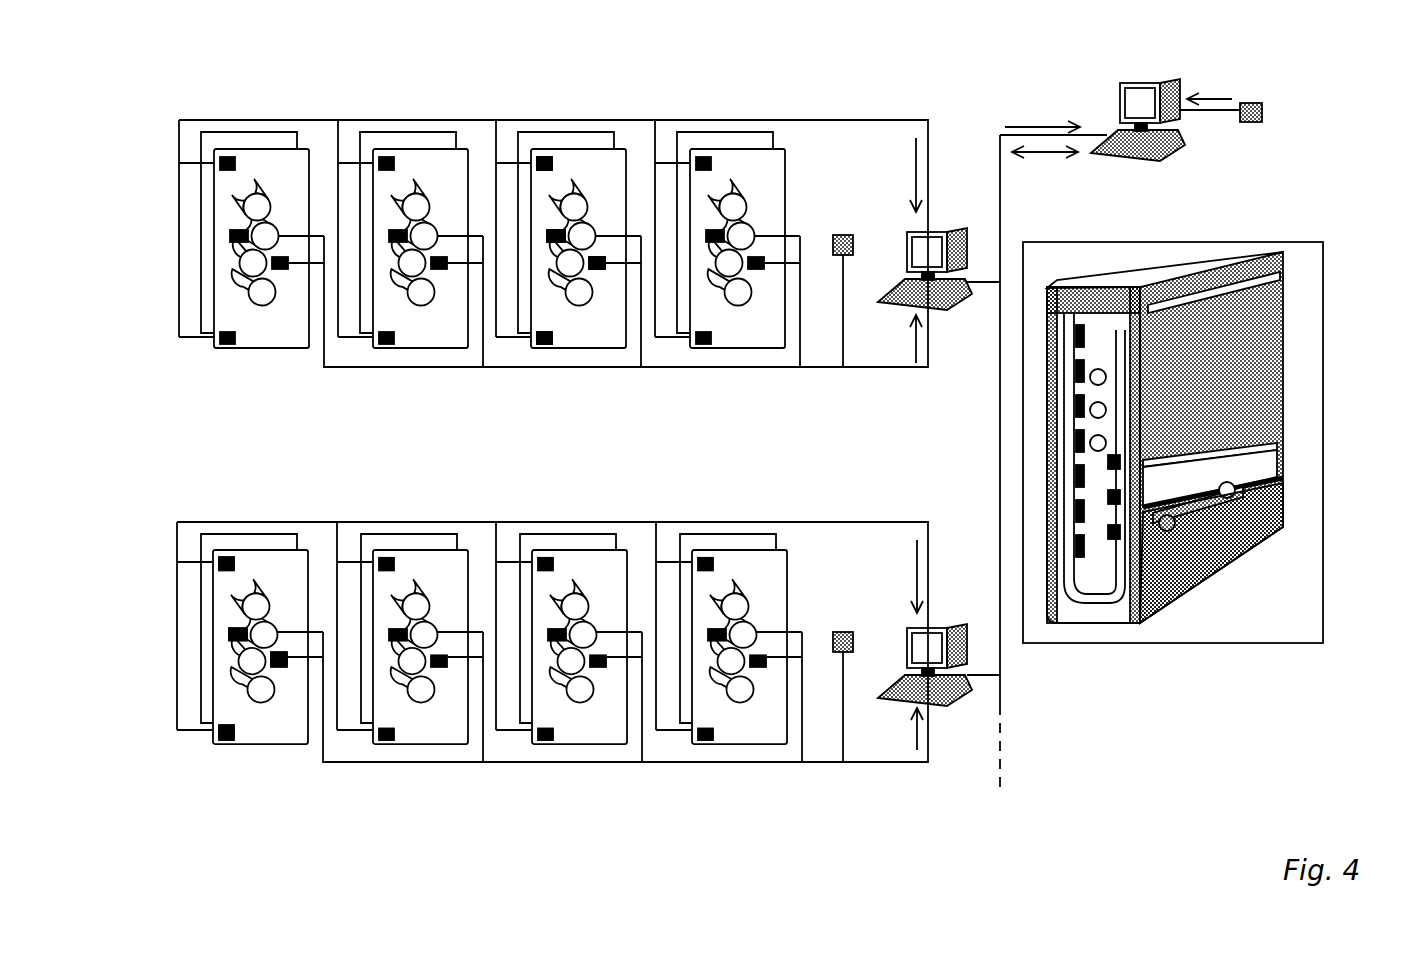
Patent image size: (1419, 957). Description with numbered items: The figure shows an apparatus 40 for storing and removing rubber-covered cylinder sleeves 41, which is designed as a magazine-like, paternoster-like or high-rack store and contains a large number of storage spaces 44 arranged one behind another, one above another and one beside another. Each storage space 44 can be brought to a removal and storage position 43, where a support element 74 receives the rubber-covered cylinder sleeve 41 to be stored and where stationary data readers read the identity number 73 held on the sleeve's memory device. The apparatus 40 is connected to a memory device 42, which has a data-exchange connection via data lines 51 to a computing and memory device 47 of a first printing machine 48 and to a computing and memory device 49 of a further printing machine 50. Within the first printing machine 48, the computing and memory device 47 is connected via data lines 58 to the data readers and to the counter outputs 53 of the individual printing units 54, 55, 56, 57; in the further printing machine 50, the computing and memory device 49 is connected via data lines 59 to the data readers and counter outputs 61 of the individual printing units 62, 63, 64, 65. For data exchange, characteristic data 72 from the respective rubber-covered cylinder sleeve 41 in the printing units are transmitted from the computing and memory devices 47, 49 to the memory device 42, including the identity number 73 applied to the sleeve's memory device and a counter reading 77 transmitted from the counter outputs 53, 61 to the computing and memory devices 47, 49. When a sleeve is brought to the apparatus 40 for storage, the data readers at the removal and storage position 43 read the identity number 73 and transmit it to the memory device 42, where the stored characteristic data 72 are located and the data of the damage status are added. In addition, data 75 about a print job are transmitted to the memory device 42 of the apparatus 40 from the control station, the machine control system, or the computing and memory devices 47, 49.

The apparatus for storing rubber-covered cylinder sleeves 40 is at (1211, 672).
The rubber-covered cylinder sleeve 41 is at (1320, 518).
The memory device 42 is at (1118, 90).
The removal and storage position 43 is at (1299, 459).
The storage space 44 is at (1167, 533).
The computing and memory device 47 is at (955, 232).
The first printing machine 48 is at (710, 114).
The computing and memory device 49 is at (975, 690).
The further printing machine 50 is at (641, 510).
The data lines 51 is at (1000, 428).
The counter output 53 is at (535, 157).
The printing unit 54 is at (737, 335).
The printing unit 55 is at (617, 338).
The printing unit 56 is at (432, 335).
The printing unit 57 is at (262, 330).
The data lines 58 is at (838, 120).
The data lines 59 is at (800, 522).
The counter output 61 is at (222, 556).
The printing unit 62 is at (733, 560).
The printing unit 63 is at (580, 565).
The printing unit 64 is at (425, 572).
The printing unit 65 is at (262, 572).
The characteristic data 72 is at (1042, 155).
The identity number 73 is at (916, 340).
The support element 74 is at (1293, 470).
The data about a print job 75 is at (1030, 127).
The counter reading 77 is at (916, 172).